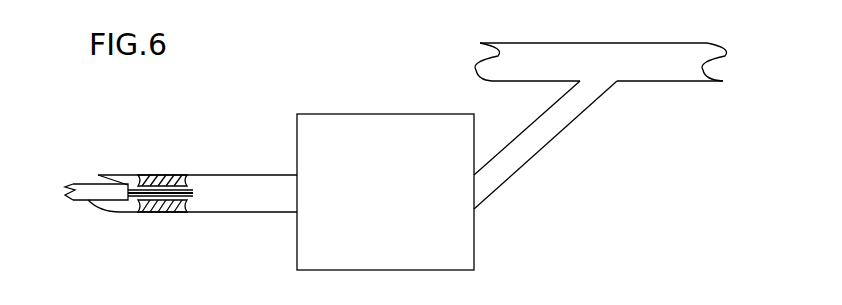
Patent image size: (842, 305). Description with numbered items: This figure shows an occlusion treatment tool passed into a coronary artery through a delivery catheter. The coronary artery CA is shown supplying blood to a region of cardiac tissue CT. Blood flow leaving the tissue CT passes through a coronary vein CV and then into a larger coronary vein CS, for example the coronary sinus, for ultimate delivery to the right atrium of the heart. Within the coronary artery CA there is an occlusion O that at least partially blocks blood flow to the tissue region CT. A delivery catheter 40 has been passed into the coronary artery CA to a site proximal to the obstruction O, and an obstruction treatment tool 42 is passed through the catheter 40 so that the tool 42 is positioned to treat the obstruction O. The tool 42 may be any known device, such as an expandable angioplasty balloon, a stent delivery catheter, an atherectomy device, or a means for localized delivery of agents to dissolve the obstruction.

The delivery catheter 40 is at (70, 198).
The obstruction treatment tool 42 is at (193, 193).
The occlusion O is at (152, 174).
The coronary artery CA is at (237, 174).
The coronary sinus CS is at (588, 43).
The coronary vein CV is at (513, 175).
The cardiac tissue CT is at (474, 240).